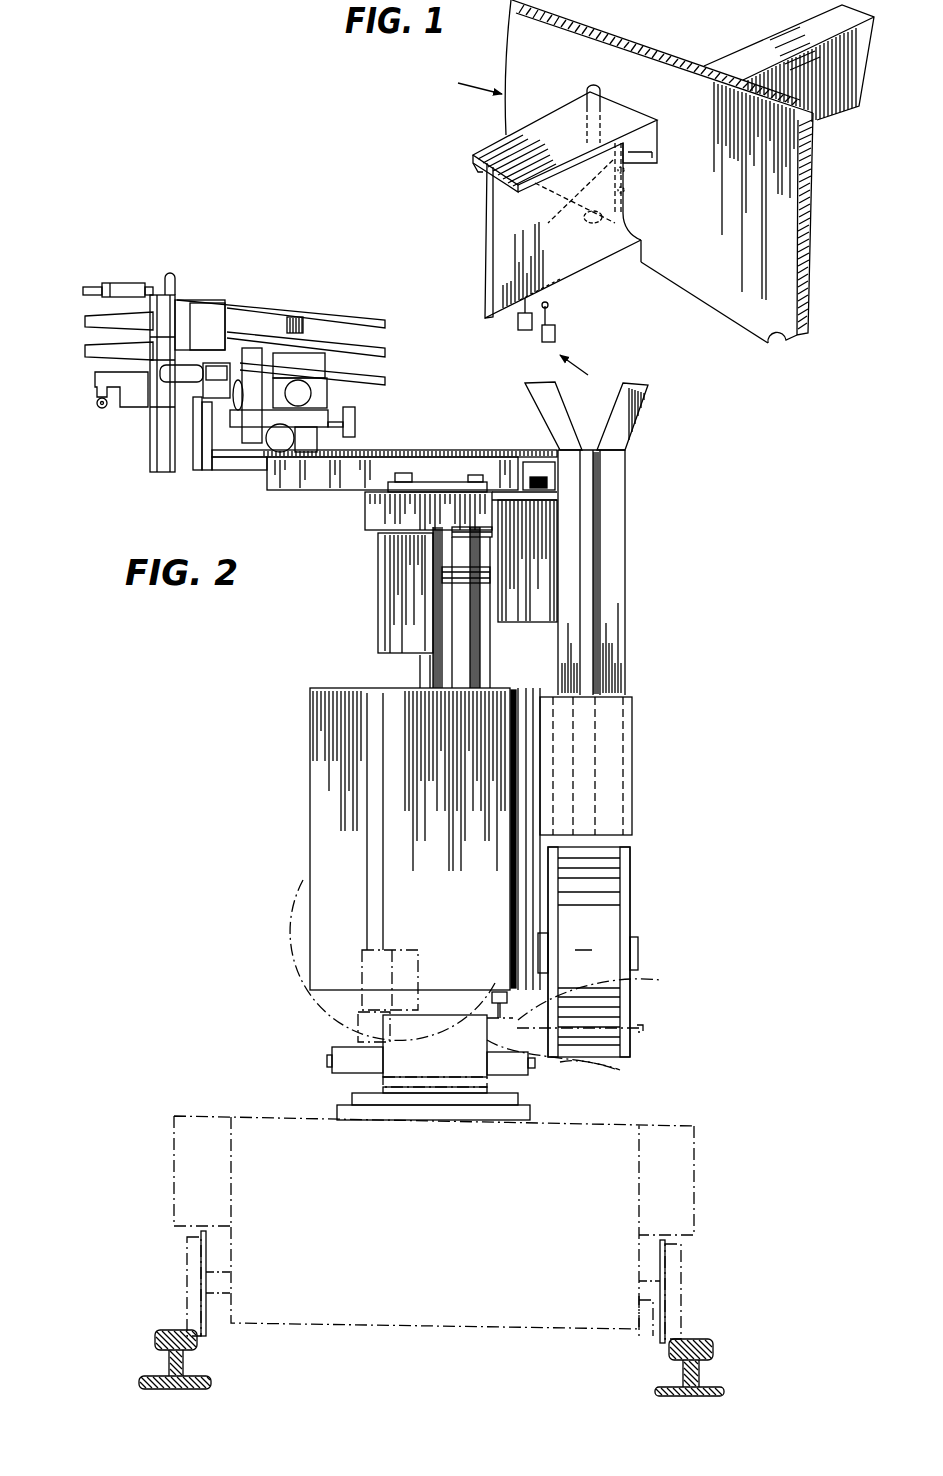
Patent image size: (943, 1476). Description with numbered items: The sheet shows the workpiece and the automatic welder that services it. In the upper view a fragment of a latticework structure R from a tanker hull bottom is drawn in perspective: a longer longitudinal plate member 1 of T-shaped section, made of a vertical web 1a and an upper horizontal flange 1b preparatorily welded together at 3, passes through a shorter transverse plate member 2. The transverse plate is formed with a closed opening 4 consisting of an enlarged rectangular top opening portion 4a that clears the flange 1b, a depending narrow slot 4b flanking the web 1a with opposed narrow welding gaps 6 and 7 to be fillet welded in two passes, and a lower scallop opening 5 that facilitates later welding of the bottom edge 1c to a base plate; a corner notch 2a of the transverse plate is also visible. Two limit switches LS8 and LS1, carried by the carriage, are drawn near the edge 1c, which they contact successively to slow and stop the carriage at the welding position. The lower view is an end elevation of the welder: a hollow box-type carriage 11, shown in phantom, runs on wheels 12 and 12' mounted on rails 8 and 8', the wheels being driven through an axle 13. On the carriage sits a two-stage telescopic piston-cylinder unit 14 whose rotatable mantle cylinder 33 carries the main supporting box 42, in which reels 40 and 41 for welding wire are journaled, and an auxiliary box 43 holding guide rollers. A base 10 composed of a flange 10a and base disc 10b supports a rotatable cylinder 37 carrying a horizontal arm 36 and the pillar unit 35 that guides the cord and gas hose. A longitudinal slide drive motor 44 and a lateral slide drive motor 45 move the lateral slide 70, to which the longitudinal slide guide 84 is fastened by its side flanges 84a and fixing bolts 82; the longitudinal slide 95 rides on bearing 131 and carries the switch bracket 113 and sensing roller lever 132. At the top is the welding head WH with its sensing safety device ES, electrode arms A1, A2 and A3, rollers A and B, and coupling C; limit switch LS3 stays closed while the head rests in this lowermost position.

In FIG. 1, the longitudinal plate member 1 is at (484, 231).
In FIG. 1, the vertical web 1a is at (547, 273).
In FIG. 1, the upper horizontal flange 1b is at (555, 132).
In FIG. 1, the bottom edge 1c is at (484, 320).
In FIG. 1, the transverse plate member 2 is at (707, 280).
In FIG. 1, the notch in plate 2a is at (778, 342).
In FIG. 1, the preparatory weld 3 is at (482, 180).
In FIG. 1, the closed opening 4 is at (650, 141).
In FIG. 1, the top opening portion 4a is at (593, 86).
In FIG. 1, the narrow slot 4b is at (624, 186).
In FIG. 1, the scallop opening 5 is at (634, 243).
In FIG. 1, the welding gap 6 is at (627, 205).
In FIG. 1, the welding gap 7 is at (573, 198).
In FIG. 1, the latticework structure R is at (454, 92).
In FIG. 1, the limit switch LS8 is at (519, 329).
In FIG. 1, the limit switch LS1 is at (556, 336).
In FIG. 2, the electric and mechanical sensing safety device ES is at (272, 348).
In FIG. 2, the welding head WH is at (181, 283).
In FIG. 2, the electrode arm A1 is at (86, 352).
In FIG. 2, the electrode arm A2 is at (86, 321).
In FIG. 2, the electrode arm A3 is at (83, 291).
In FIG. 2, the sensing roller lever 132 is at (95, 394).
In FIG. 2, the bearing 131 is at (148, 425).
In FIG. 2, the differential gearing and switch bracket 113 is at (212, 437).
In FIG. 2, the roller A is at (315, 443).
In FIG. 2, the roller B is at (317, 399).
In FIG. 2, the longitudinal slide 95 is at (222, 468).
In FIG. 2, the longitudinal slide guide 84 is at (280, 484).
In FIG. 2, the side flanges 84a is at (440, 483).
In FIG. 2, the fixing bolts 82 is at (480, 477).
In FIG. 2, the lateral slide 70 is at (366, 510).
In FIG. 2, the coupling C is at (450, 553).
In FIG. 2, the lateral slide drive motor 45 is at (385, 598).
In FIG. 2, the rotatable mantle cylinder 33 is at (403, 661).
In FIG. 2, the piston-cylinder unit 14 is at (387, 676).
In FIG. 2, the longitudinal slide drive motor 44 is at (522, 602).
In FIG. 2, the pillar unit 35 is at (625, 490).
In FIG. 2, the auxiliary box 43 is at (613, 752).
In FIG. 2, the main supporting box 42 is at (320, 833).
In FIG. 2, the reel 40 is at (615, 890).
In FIG. 2, the limit switch LS3 is at (503, 990).
In FIG. 2, the reel 41 is at (300, 950).
In FIG. 2, the horizontal arm 36 is at (560, 1000).
In FIG. 2, the rotatable cylinder 37 is at (618, 1070).
In FIG. 2, the base 10 is at (353, 1094).
In FIG. 2, the flange 10a is at (547, 1090).
In FIG. 2, the base disc 10b is at (540, 1110).
In FIG. 2, the carriage 11 is at (640, 1175).
In FIG. 2, the wheels 12 is at (693, 1291).
In FIG. 2, the wheels 12' is at (183, 1283).
In FIG. 2, the axle 13 is at (640, 1330).
In FIG. 2, the rail 8 is at (692, 1342).
In FIG. 2, the rail 8' is at (168, 1335).